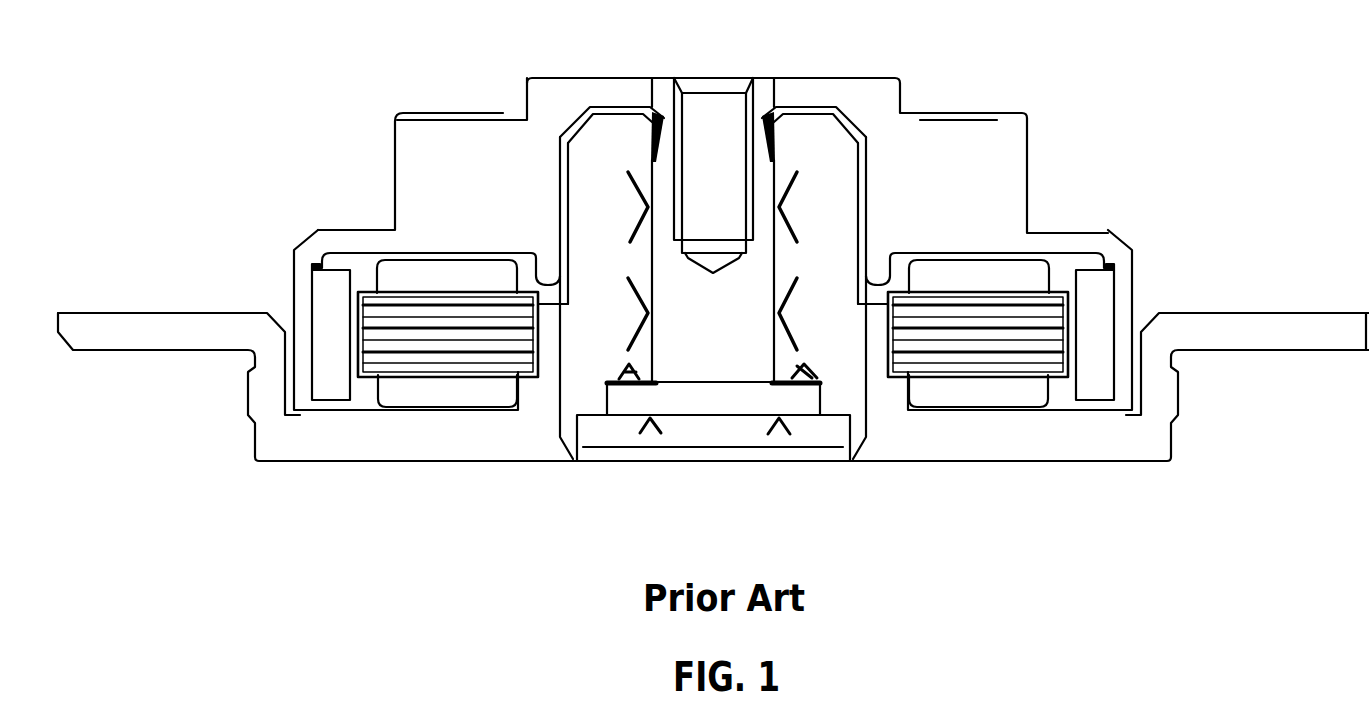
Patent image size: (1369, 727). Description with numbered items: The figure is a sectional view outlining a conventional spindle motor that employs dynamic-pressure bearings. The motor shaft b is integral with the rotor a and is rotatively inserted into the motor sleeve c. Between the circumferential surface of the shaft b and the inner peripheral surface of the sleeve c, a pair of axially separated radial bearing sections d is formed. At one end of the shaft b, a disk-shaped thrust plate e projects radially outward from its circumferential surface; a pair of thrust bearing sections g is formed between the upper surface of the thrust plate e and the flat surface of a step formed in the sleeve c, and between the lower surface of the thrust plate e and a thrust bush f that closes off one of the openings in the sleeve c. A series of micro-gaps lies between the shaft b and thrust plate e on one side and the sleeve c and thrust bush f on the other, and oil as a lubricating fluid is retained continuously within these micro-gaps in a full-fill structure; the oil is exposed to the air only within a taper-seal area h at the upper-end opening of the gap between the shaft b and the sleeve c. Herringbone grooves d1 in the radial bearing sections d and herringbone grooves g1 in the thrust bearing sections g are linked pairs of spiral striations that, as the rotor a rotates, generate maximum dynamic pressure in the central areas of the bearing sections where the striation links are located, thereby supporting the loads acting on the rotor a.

The rotor a is at (887, 93).
The motor shaft b is at (757, 100).
The motor sleeve c is at (820, 150).
The radial bearing section d is at (785, 312).
The herringbone grooves d1 is at (645, 310).
The thrust plate e is at (618, 398).
The thrust bush f is at (718, 433).
The thrust bearing section g is at (717, 410).
The herringbone grooves g1 is at (786, 418).
The taper-seal area h is at (655, 130).